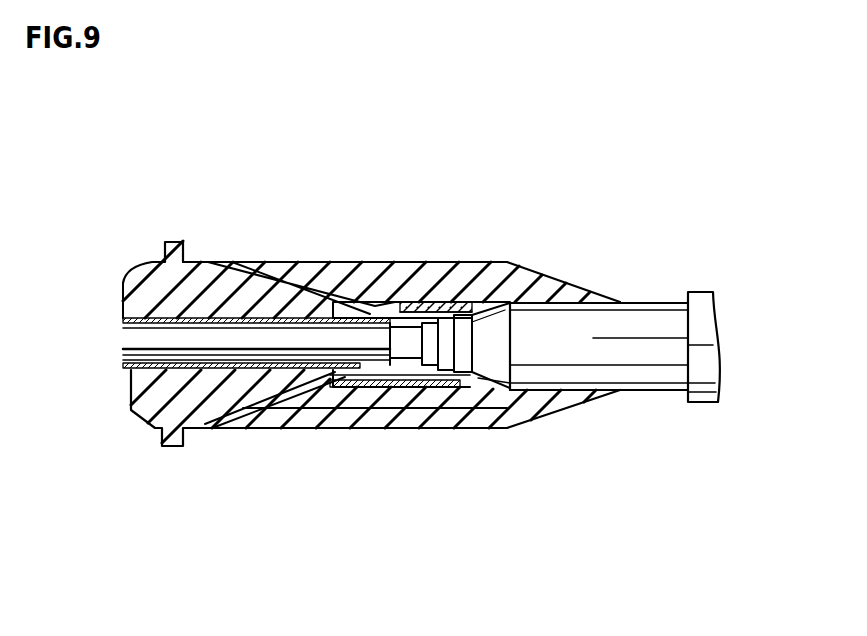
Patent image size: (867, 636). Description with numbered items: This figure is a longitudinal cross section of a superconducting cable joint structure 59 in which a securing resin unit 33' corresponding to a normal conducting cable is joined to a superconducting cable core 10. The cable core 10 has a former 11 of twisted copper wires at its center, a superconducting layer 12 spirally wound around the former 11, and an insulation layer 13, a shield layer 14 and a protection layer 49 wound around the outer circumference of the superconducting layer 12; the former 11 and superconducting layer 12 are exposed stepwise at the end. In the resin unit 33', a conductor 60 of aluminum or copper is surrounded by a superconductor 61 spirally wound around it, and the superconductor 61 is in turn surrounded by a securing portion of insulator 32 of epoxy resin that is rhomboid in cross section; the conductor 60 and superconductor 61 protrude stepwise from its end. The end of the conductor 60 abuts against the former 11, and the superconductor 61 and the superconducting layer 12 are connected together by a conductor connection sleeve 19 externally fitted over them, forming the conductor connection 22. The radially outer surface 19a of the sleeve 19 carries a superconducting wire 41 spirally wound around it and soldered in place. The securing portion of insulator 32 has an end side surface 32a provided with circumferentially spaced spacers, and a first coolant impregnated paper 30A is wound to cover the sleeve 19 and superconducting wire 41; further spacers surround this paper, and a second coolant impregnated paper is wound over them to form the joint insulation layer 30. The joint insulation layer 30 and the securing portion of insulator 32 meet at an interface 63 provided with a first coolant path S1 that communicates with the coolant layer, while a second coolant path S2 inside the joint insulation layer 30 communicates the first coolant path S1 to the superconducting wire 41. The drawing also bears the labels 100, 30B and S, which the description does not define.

The superconducting cable joint structure 59 is at (681, 99).
The optical cable assembly 100 is at (629, 293).
The cable core 10 is at (670, 322).
The former 11 is at (399, 375).
The superconducting layer 12 is at (466, 371).
The insulation layer 13 is at (485, 368).
The shield layer 14 is at (640, 375).
The protection layer 49 is at (705, 402).
The conductor connection sleeve 19 is at (438, 282).
The radially outer surface 19a is at (388, 300).
The conductor connection 22 is at (392, 370).
The joint insulation layer 30 is at (342, 130).
The first coolant impregnated paper 30A is at (315, 272).
The rear housing part 30B is at (261, 270).
The securing portion of insulator 32 is at (157, 268).
The side surface 32a is at (243, 268).
The securing resin unit 33' is at (301, 252).
The superconducting wire 41 is at (405, 306).
The conductor 60 is at (296, 340).
The superconductor 61 is at (236, 337).
The interface 63 is at (257, 385).
The space S is at (232, 270).
The first coolant path S1 is at (216, 268).
The second coolant path S2 is at (348, 292).